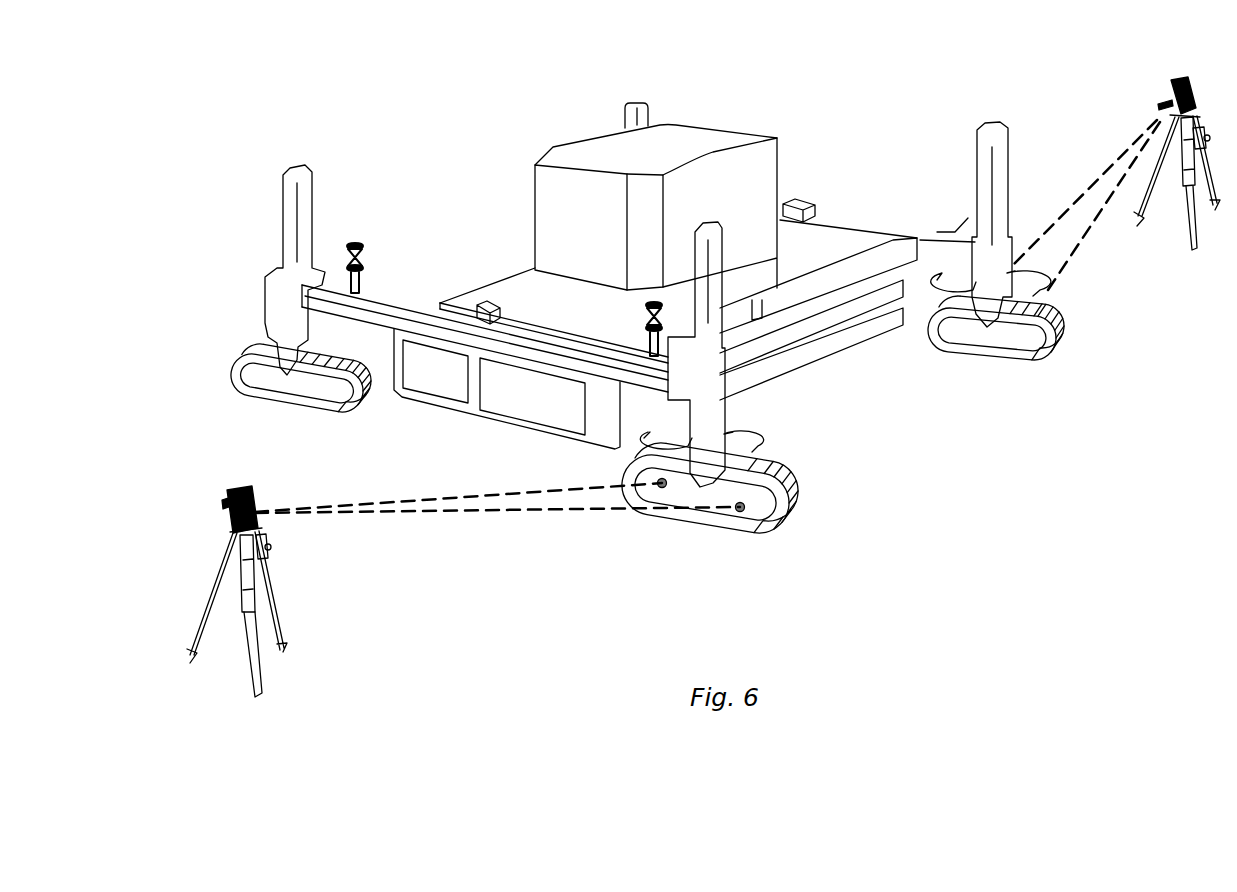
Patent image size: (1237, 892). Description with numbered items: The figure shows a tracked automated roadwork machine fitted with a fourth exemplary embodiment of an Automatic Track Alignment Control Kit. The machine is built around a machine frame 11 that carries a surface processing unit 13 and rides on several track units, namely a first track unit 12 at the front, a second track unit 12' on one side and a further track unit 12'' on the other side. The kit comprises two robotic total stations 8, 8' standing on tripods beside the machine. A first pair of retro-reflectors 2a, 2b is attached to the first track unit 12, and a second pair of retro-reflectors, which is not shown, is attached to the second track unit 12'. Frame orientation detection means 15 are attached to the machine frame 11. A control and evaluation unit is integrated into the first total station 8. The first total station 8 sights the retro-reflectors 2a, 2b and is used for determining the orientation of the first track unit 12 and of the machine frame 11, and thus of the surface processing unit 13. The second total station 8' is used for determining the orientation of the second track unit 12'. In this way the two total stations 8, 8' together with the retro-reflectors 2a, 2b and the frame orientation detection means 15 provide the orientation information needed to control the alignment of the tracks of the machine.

The first robotic total station 8 is at (463, 590).
The second robotic total station 8' is at (1116, 164).
The machine frame 11 is at (527, 328).
The first track unit 12 is at (764, 377).
The second track unit 12' is at (1059, 248).
The track unit 12'' is at (280, 310).
The surface processing unit 13 is at (470, 408).
The frame orientation detection means 15 is at (645, 302).
The retro-reflector 2a is at (742, 508).
The retro-reflector 2b is at (660, 483).